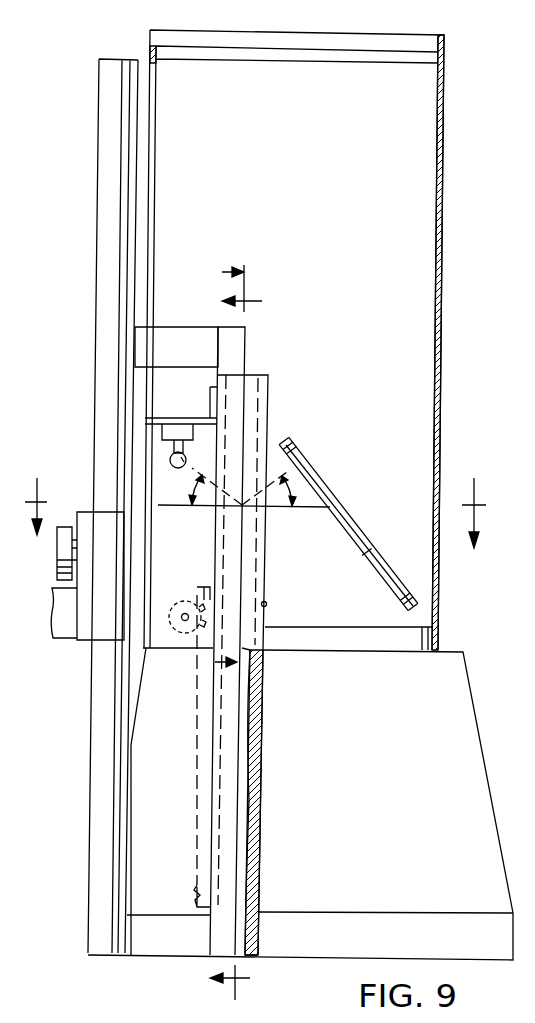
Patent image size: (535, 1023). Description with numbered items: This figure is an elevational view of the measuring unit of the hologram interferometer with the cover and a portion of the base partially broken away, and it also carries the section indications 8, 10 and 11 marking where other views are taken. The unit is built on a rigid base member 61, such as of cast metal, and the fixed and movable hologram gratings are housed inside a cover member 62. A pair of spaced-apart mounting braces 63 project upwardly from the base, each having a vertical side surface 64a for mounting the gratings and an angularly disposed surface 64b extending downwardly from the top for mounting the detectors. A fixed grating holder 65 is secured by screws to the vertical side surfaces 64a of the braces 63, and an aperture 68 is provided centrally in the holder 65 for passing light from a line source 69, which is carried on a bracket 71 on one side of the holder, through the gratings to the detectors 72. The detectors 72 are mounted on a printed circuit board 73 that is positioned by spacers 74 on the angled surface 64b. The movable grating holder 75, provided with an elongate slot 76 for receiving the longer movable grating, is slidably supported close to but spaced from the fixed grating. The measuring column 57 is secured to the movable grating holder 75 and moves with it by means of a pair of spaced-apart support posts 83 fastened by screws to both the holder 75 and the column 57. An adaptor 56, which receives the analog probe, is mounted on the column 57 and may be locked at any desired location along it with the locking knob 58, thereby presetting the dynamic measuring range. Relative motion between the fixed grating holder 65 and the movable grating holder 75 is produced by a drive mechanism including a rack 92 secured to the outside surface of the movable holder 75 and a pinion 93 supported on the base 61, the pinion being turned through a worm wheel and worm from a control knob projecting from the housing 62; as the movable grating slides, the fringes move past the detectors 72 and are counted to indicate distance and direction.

The section line 8- 8 is at (253, 505).
The section line 10- 10 is at (231, 467).
The section line 11- 11 is at (251, 643).
The adaptor 56 is at (93, 600).
The measuring column 57 is at (99, 147).
The locking knob 58 is at (57, 550).
The base member 61 is at (463, 772).
The cover member 62 is at (441, 346).
The mounting braces 63 is at (397, 620).
The vertical side surface 64a is at (266, 604).
The angularly disposed surface 64b is at (362, 552).
The fixed grating holder 65 is at (268, 393).
The aperture 68 is at (270, 540).
The line source 69 is at (168, 463).
The bracket 71 is at (160, 418).
The detectors 72 is at (310, 453).
The printed circuit board 73 is at (337, 500).
The spacers 74 is at (285, 443).
The movable grating holder 75 is at (236, 347).
The elongate slot 76 is at (203, 797).
The support posts 83 is at (170, 340).
The rack 92 is at (208, 595).
The pinion 93 is at (185, 636).